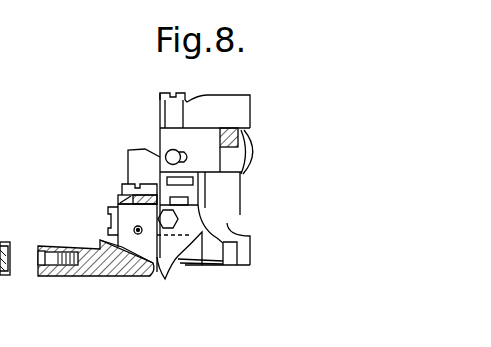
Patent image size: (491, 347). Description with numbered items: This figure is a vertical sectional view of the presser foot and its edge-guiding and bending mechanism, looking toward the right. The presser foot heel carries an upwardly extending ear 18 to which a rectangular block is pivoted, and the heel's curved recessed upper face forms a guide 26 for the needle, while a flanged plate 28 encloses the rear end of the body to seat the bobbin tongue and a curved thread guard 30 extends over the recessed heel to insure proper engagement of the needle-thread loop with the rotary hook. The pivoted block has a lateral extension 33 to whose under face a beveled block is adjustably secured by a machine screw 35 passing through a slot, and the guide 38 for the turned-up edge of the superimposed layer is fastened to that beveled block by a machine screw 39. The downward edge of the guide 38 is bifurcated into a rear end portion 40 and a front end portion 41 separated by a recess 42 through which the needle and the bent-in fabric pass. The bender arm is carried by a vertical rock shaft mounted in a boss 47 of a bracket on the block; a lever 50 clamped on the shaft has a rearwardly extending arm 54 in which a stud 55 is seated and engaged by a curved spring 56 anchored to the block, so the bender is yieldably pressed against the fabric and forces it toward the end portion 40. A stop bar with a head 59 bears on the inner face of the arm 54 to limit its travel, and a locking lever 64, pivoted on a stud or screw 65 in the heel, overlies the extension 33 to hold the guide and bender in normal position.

The ear 18 is at (135, 148).
The guide 26 is at (103, 242).
The plate 28 is at (58, 248).
The thread guard 30 is at (118, 208).
The lateral extension 33 is at (190, 193).
The machine screw 35 is at (205, 178).
The guide 38 is at (187, 225).
The machine screw 39 is at (170, 216).
The end portion 40 is at (160, 273).
The end portion 41 is at (223, 266).
The recess 42 is at (186, 263).
The boss 47 is at (250, 240).
The lever 50 is at (244, 136).
The rearwardly extending arm 54 is at (188, 138).
The stud 55 is at (176, 82).
The curved spring 56 is at (243, 100).
The head 59 is at (167, 153).
The locking lever 64 is at (110, 206).
The stud or screw 65 is at (126, 183).